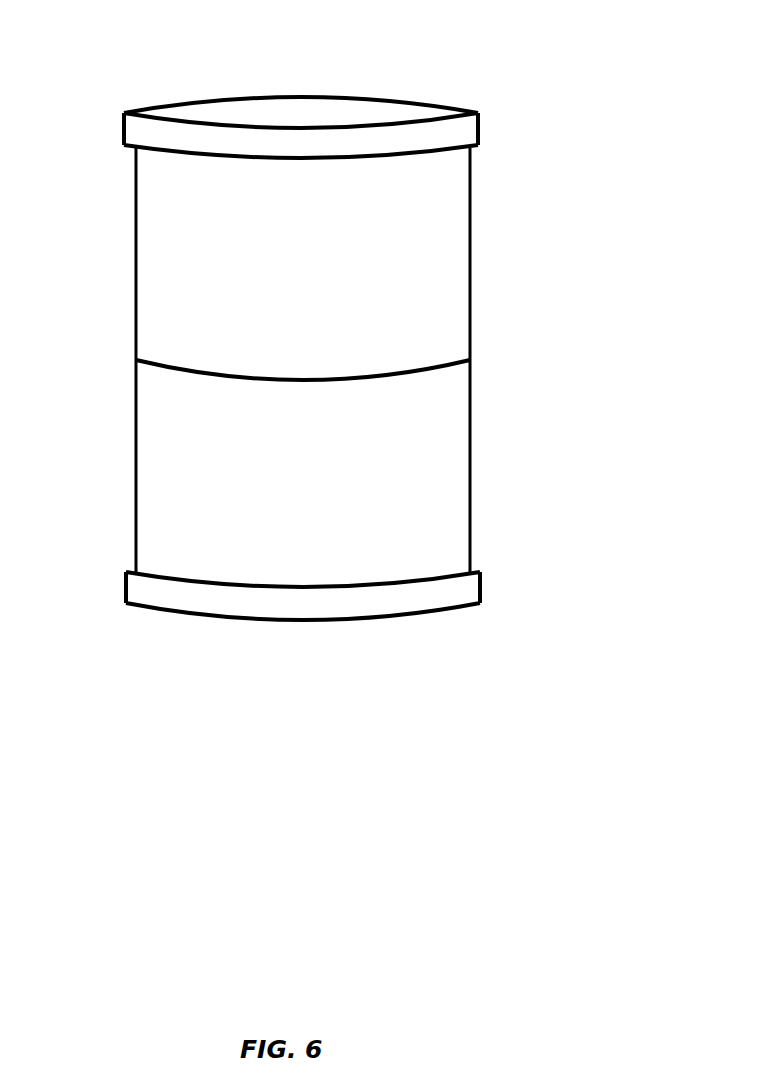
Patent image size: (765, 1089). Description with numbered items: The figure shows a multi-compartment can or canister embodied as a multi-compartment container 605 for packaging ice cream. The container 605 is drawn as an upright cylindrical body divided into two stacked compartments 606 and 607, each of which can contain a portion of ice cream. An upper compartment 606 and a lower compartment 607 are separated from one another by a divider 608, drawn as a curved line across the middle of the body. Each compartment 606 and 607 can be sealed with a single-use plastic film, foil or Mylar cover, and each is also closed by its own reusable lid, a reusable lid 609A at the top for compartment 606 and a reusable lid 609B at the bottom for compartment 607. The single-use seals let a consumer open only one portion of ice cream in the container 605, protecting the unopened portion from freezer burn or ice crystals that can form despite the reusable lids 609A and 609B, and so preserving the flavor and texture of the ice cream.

The multi-compartment container 605 is at (470, 300).
The compartment 606 is at (303, 254).
The compartment 607 is at (303, 466).
The divider 608 is at (173, 365).
The reusable lid 609A is at (357, 113).
The reusable lid 609B is at (348, 602).